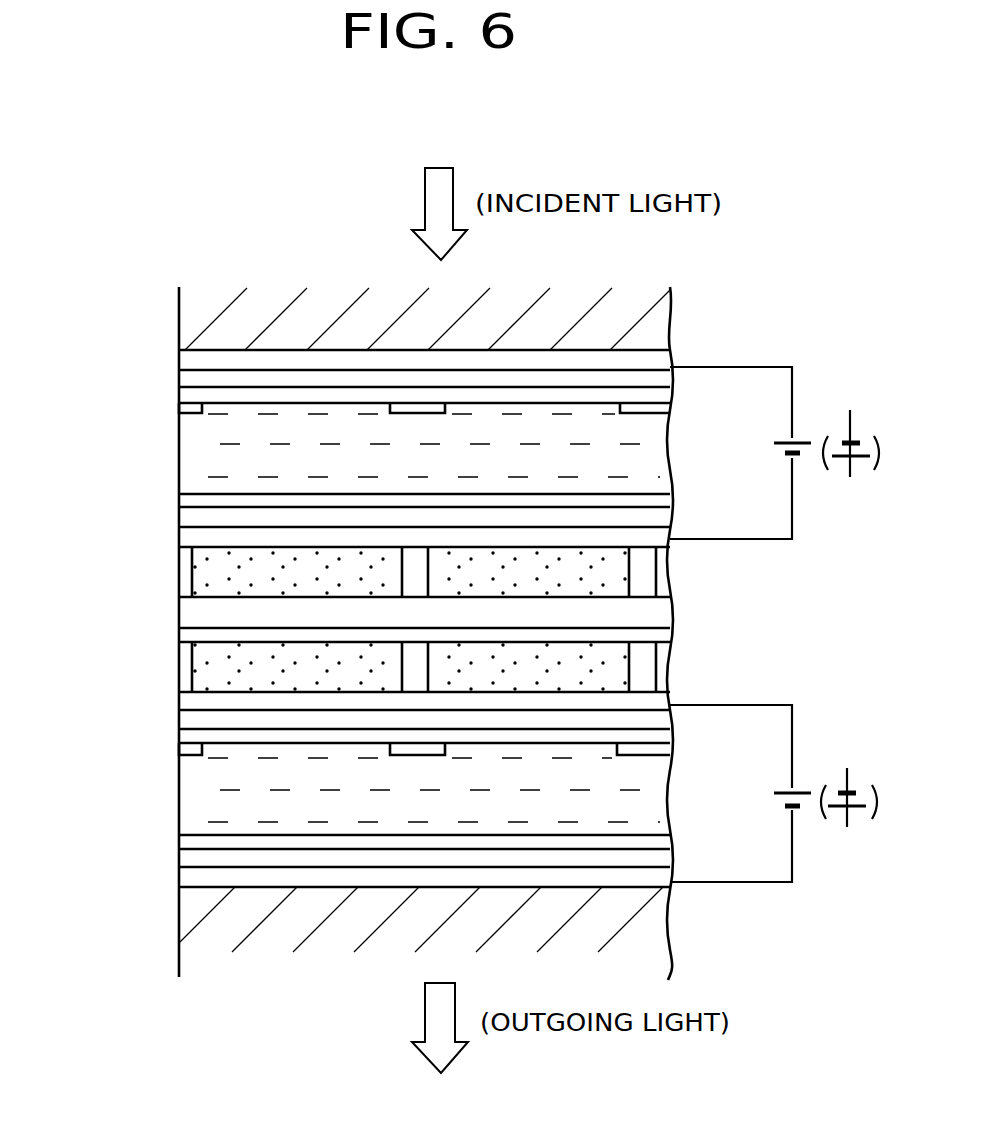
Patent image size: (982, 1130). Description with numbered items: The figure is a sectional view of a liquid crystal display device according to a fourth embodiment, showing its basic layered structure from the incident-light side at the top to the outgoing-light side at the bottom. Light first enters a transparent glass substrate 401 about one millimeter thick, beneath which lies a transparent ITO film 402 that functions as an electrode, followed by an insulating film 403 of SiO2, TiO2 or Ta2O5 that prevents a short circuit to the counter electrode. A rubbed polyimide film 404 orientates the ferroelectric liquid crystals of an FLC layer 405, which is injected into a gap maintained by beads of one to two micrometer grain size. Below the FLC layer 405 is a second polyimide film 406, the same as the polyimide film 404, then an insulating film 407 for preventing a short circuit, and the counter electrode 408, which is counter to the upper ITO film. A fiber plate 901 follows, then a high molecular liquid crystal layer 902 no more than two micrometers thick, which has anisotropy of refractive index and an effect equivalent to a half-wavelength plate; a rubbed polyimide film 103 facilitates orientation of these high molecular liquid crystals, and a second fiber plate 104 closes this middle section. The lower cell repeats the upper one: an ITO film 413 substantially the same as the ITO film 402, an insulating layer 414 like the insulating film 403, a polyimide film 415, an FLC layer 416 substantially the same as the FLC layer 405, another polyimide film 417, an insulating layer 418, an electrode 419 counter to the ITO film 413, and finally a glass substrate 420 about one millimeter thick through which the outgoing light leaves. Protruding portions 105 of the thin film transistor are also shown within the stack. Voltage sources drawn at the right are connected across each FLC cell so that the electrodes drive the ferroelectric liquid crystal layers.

The transparent glass substrate 401 is at (179, 318).
The transparent ITO film 402 is at (179, 360).
The insulating film 403 is at (179, 380).
The polyimide film 404 is at (179, 393).
The protruding portions of TFT 105 is at (406, 400).
The FLC layer 405 is at (179, 445).
The polyimide film 406 is at (179, 502).
The insulating film 407 is at (179, 515).
The counter electrode 408 is at (179, 537).
The fiber plate 901 is at (179, 568).
The high molecular liquid crystal layer 902 is at (179, 616).
The polyimide film 103 is at (179, 633).
The fiber plate 104 is at (179, 665).
The ITO film 413 is at (179, 703).
The insulating layer 414 is at (179, 725).
The polyimide film 415 is at (179, 738).
The FLC layer 416 is at (179, 787).
The polyimide film 417 is at (179, 841).
The insulating layer 418 is at (179, 858).
The counter electrode 419 is at (179, 878).
The glass substrate 420 is at (179, 913).